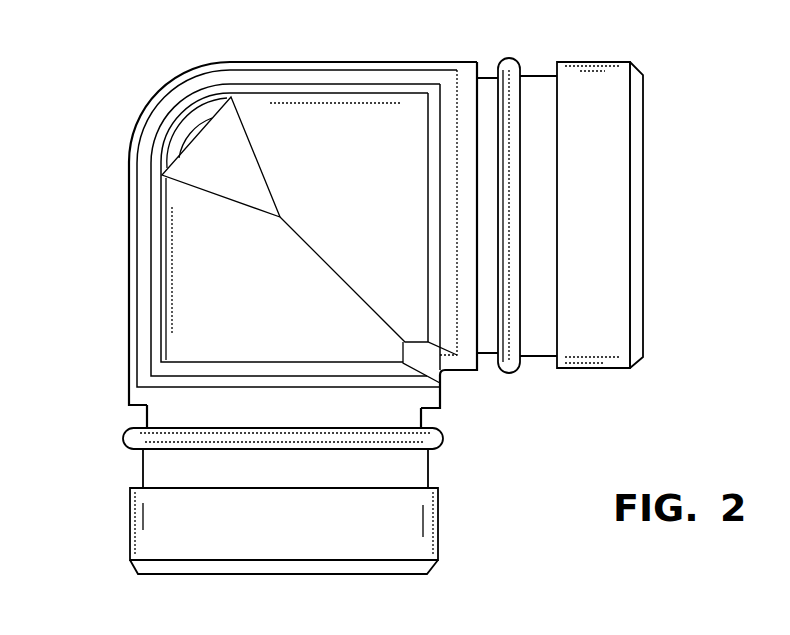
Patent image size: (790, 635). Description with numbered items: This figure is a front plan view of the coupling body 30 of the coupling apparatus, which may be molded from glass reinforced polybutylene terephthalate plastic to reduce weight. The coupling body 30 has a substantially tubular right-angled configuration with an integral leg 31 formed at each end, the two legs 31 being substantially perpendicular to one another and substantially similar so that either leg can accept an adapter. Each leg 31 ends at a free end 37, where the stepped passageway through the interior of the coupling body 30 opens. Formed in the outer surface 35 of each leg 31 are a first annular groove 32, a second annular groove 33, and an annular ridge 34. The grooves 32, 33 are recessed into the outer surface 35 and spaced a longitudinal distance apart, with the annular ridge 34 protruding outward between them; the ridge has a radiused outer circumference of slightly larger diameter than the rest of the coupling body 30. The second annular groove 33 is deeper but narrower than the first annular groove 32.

The coupling body 30 is at (106, 73).
The leg 31 is at (617, 102).
The first annular groove 32 is at (542, 92).
The second annular groove 33 is at (497, 77).
The annular ridge 34 is at (443, 438).
The outer surface 35 is at (606, 368).
The free end 37 is at (636, 205).